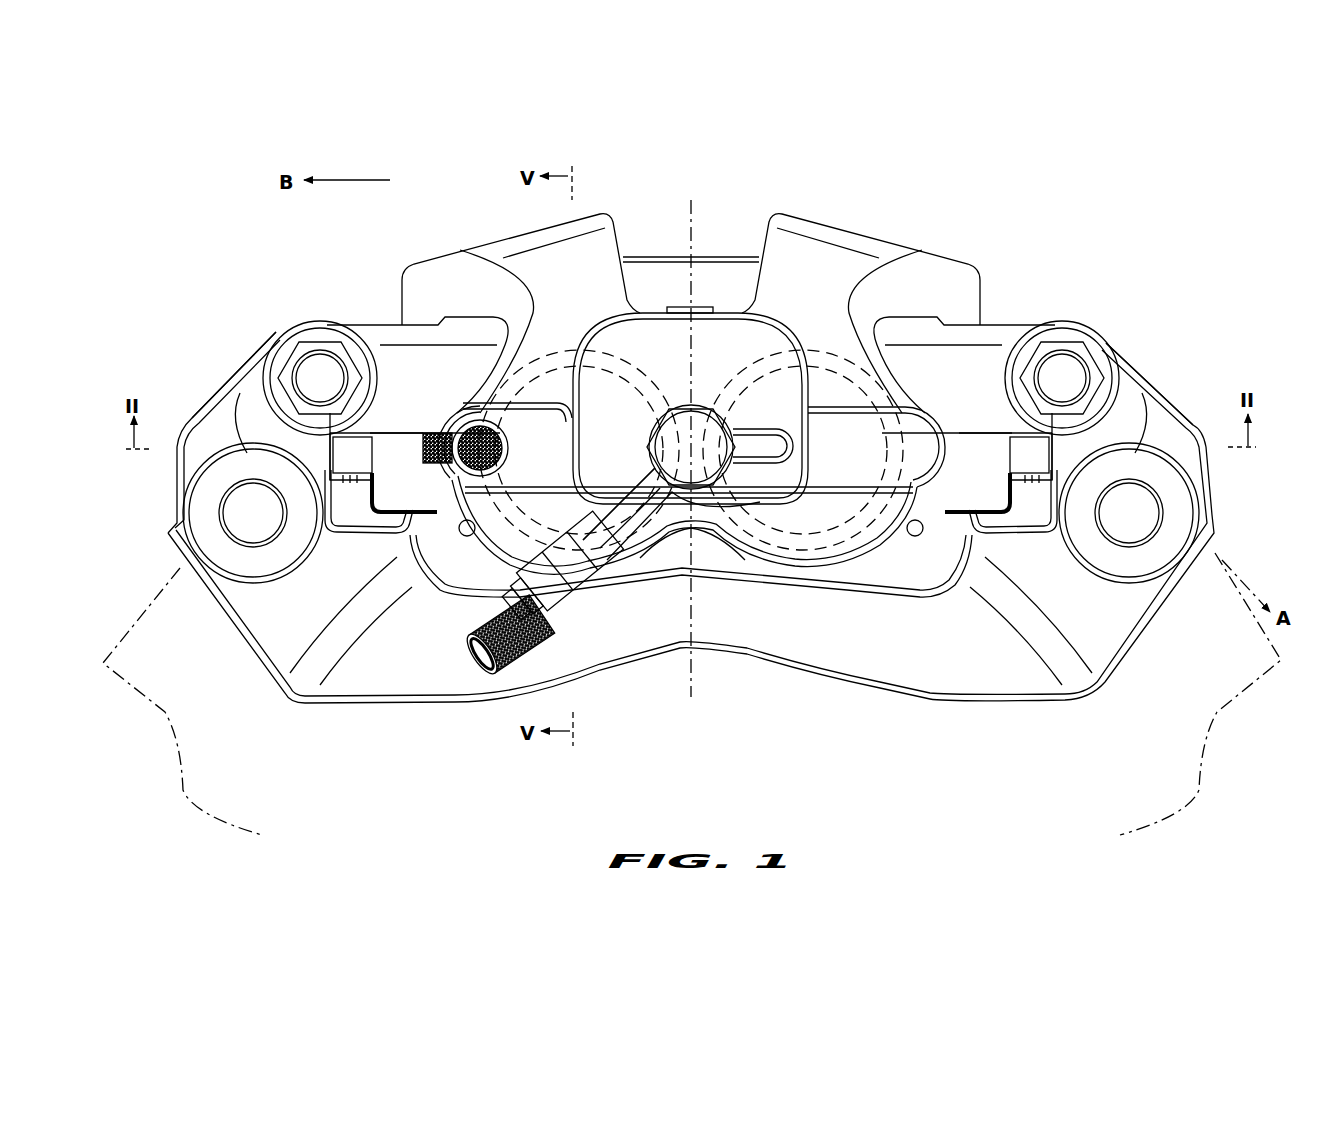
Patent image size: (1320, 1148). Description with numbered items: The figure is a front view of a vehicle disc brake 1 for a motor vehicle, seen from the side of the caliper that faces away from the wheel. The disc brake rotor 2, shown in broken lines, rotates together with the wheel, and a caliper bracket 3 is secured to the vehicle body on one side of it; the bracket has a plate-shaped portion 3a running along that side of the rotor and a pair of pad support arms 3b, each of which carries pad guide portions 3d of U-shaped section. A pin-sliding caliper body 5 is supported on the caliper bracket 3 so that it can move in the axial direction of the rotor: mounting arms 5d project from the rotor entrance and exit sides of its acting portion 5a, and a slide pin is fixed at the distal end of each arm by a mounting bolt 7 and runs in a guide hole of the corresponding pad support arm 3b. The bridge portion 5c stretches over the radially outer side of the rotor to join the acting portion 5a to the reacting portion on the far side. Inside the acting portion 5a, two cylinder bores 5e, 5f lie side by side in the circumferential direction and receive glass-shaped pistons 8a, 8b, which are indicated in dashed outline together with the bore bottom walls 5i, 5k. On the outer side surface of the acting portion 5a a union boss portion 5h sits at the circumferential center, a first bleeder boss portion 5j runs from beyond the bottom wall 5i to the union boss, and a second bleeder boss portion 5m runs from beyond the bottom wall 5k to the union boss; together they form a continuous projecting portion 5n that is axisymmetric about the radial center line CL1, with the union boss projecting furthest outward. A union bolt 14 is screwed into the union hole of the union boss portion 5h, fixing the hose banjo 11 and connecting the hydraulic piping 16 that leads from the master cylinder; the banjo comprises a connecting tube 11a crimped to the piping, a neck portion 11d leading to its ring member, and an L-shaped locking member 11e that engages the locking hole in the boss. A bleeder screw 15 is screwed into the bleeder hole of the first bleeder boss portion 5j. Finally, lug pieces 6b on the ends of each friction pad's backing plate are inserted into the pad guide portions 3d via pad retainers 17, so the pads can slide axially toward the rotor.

The vehicle disc brake 1 is at (698, 140).
The disc brake rotor 2 is at (143, 603).
The caliper bracket 3 is at (1163, 378).
The plate-shaped portion 3a is at (727, 640).
The pad support arms 3b is at (257, 380).
The pad guide portions 3d is at (380, 490).
The caliper body 5 is at (914, 232).
The acting portion 5a is at (684, 533).
The bridge portion 5c is at (500, 240).
The mounting arms 5d is at (383, 330).
The cylinder bore 5e is at (580, 350).
The cylinder bore 5f is at (805, 342).
The union boss portion 5h is at (705, 326).
The bottom wall 5i is at (503, 555).
The first bleeder boss portion 5j is at (548, 400).
The bottom wall 5k is at (805, 550).
The second bleeder boss portion 5m is at (920, 423).
The continuous projecting portion 5n is at (774, 324).
The lug pieces 6b is at (400, 443).
The mounting bolt 7 is at (317, 360).
The piston 8a is at (637, 380).
The piston 8b is at (752, 380).
The hose banjo 11 is at (591, 620).
The connecting tube 11a is at (597, 570).
The neck portion 11d is at (637, 487).
The L-shaped locking member 11e is at (760, 440).
The union bolt 14 is at (703, 423).
The bleeder screw 15 is at (466, 418).
The hydraulic piping 16 is at (477, 640).
The pad retainers 17 is at (422, 520).
The radial center line CL1 is at (700, 212).